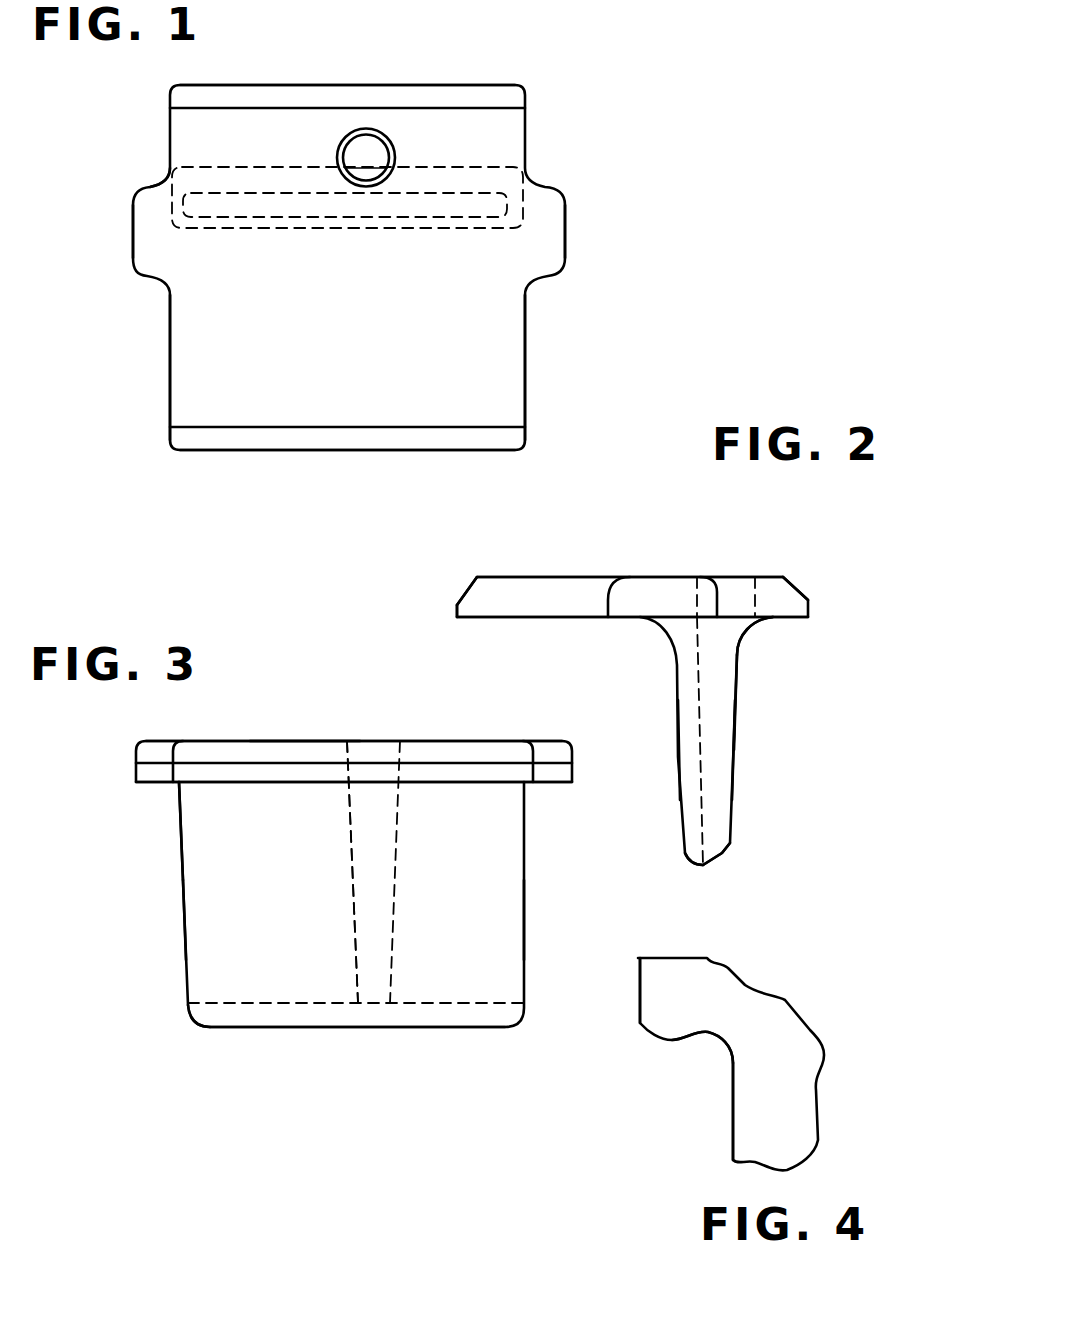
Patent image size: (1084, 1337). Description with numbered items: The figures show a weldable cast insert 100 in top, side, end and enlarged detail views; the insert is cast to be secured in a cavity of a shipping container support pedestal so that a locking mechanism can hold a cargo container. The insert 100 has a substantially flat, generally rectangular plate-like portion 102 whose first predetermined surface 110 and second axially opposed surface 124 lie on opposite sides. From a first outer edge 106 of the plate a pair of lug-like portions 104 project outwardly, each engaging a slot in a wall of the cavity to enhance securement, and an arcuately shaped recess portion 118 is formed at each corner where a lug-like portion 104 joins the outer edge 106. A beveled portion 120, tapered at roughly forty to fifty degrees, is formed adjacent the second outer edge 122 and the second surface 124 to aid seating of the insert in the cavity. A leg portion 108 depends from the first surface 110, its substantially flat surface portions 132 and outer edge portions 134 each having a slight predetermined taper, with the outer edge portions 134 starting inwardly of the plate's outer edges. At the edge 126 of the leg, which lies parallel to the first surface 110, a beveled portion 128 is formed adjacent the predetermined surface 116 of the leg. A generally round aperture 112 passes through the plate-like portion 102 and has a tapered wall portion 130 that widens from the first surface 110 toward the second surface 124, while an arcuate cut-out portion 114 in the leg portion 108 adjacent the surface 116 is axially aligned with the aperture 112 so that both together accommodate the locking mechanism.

In FIG. 1, the weldable cast insert 100 is at (585, 219).
In FIG. 2, the weldable cast insert 100 is at (669, 563).
In FIG. 3, the weldable cast insert 100 is at (453, 728).
In FIG. 1, the plate-like portion 102 is at (520, 338).
In FIG. 2, the plate-like portion 102 is at (520, 577).
In FIG. 3, the plate-like portion 102 is at (303, 745).
In FIG. 4, the plate-like portion 102 is at (782, 1022).
In FIG. 1, the lug-like portion 104 is at (136, 280).
In FIG. 2, the lug-like portion 104 is at (645, 592).
In FIG. 3, the lug-like portion 104 is at (145, 763).
In FIG. 4, the lug-like portion 104 is at (643, 1020).
In FIG. 1, the outer edge 106 is at (170, 388).
In FIG. 2, the outer edge 106 is at (545, 620).
In FIG. 3, the outer edge 106 is at (528, 745).
In FIG. 4, the outer edge 106 is at (733, 1140).
In FIG. 1, the leg portion 108 is at (538, 171).
In FIG. 2, the leg portion 108 is at (680, 690).
In FIG. 3, the leg portion 108 is at (515, 868).
In FIG. 2, the first predetermined surface 110 is at (795, 622).
In FIG. 3, the first predetermined surface 110 is at (205, 790).
In FIG. 1, the aperture 112 is at (385, 148).
In FIG. 2, the aperture 112 is at (722, 577).
In FIG. 3, the aperture 112 is at (412, 784).
In FIG. 2, the cut-out portion 114 is at (695, 772).
In FIG. 3, the cut-out portion 114 is at (416, 1032).
In FIG. 2, the predetermined surface 116 is at (740, 695).
In FIG. 1, the arcuately shaped recess portion 118 is at (168, 182).
In FIG. 4, the arcuately shaped recess portion 118 is at (710, 1035).
In FIG. 1, the beveled portion 120 is at (516, 92).
In FIG. 2, the beveled portion 120 is at (800, 590).
In FIG. 3, the beveled portion 120 is at (216, 745).
In FIG. 1, the second outer edge 122 is at (259, 85).
In FIG. 2, the second outer edge 122 is at (456, 614).
In FIG. 1, the second axially opposed surface 124 is at (326, 314).
In FIG. 3, the second axially opposed surface 124 is at (265, 745).
In FIG. 2, the edge of leg portion 126 is at (700, 868).
In FIG. 3, the edge of leg portion 126 is at (300, 1030).
In FIG. 2, the beveled portion of leg portion 128 is at (725, 858).
In FIG. 3, the beveled portion of leg portion 128 is at (210, 1030).
In FIG. 1, the tapered wall portion 130 is at (364, 128).
In FIG. 3, the tapered wall portion 130 is at (366, 745).
In FIG. 2, the substantially flat surface portion 132 is at (680, 735).
In FIG. 3, the outer edge portion 134 is at (180, 908).